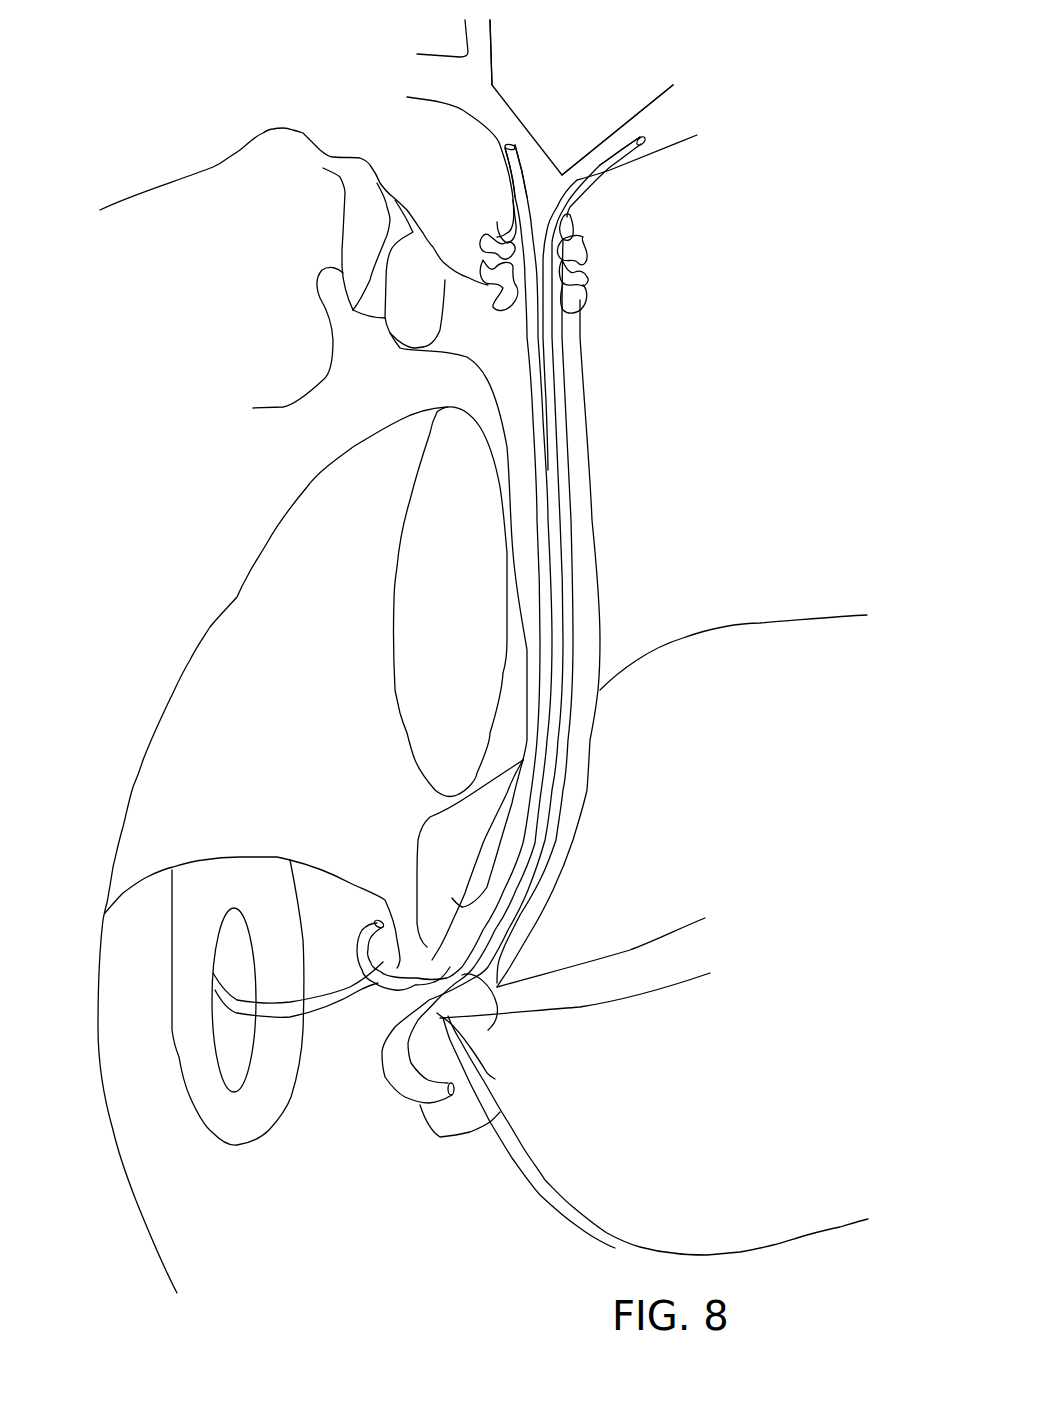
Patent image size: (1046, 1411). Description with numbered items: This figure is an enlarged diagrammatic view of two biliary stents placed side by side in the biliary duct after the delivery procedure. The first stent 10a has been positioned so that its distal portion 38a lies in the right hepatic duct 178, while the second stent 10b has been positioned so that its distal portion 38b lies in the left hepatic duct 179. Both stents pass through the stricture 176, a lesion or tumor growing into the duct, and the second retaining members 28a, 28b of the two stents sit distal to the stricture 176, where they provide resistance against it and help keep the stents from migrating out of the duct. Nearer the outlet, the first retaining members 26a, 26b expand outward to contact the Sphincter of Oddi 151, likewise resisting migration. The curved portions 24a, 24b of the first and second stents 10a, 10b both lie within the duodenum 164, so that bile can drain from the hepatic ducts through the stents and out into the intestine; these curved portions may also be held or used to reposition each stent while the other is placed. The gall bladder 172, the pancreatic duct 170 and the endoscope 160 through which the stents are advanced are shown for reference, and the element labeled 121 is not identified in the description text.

The first stent 10a is at (537, 363).
The second stent 10b is at (565, 485).
The distal portion of the first stent 38a is at (505, 143).
The distal portion of the second stent 38b is at (643, 138).
The second retaining member of the first stent 28a is at (512, 232).
The second retaining member of the second stent 28b is at (570, 230).
The stricture 176 is at (585, 275).
The right hepatic duct 178 is at (492, 87).
The left hepatic duct 179 is at (663, 115).
The gall bladder 172 is at (210, 210).
The first retaining member of the first stent 26a is at (468, 899).
The first retaining member of the second stent 26b is at (502, 1020).
The curved portion of the first stent 24a is at (359, 947).
The curved portion of the second stent 24b is at (483, 1127).
The gastric tube 121 is at (233, 1000).
The Sphincter of Oddi 151 is at (495, 1079).
The endoscope 160 is at (207, 1083).
The duodenum 164 is at (170, 1187).
The pancreatic duct 170 is at (642, 970).